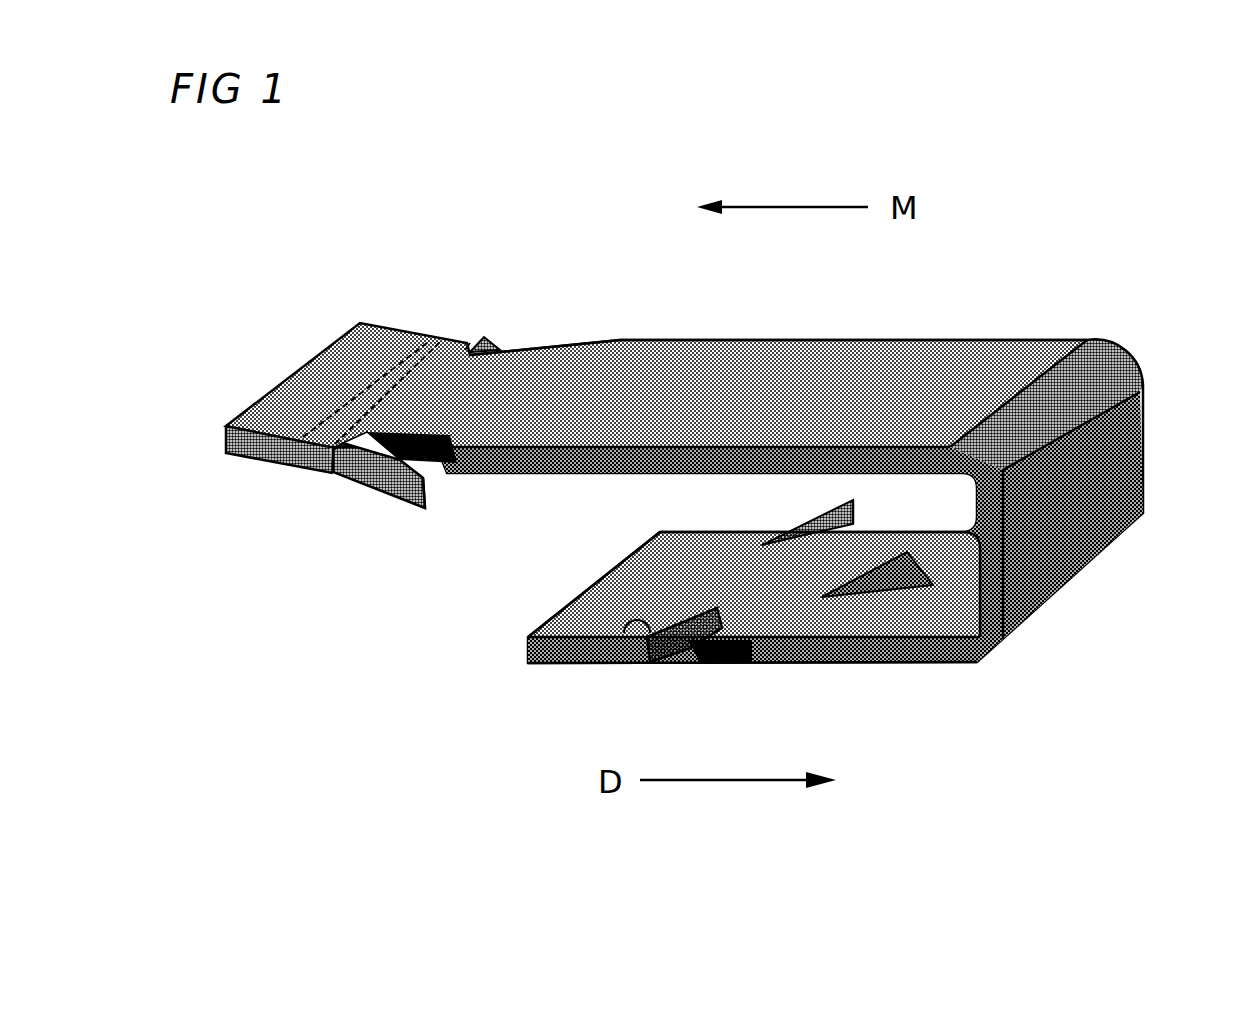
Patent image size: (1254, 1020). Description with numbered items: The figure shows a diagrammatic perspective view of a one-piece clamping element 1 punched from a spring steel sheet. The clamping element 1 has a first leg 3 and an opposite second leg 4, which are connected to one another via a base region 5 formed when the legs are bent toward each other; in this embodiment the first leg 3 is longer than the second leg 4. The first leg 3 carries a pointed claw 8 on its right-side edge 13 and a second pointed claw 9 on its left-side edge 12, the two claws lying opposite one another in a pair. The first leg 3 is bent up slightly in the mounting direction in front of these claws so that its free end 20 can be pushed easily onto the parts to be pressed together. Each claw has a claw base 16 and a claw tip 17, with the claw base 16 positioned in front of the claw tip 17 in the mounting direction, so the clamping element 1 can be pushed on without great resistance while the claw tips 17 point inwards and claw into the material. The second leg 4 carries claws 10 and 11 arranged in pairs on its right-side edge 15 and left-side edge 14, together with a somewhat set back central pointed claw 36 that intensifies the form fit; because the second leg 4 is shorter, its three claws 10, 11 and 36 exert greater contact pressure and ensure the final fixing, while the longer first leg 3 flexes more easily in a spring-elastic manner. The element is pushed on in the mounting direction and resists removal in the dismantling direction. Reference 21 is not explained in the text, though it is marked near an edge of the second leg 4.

The clamping element 1 is at (1154, 231).
The first leg 3 is at (735, 368).
The second leg 4 is at (843, 667).
The base region 5 is at (1143, 452).
The pointed claw 8 is at (497, 352).
The second pointed claw 9 is at (380, 488).
The claw 10 is at (858, 516).
The claw 11 is at (685, 662).
The left-side edge 12 is at (614, 478).
The right-side edge 13 is at (628, 338).
The left-side edge 14 is at (602, 680).
The right-side edge 15 is at (735, 528).
The claw base 16 is at (472, 346).
The claw tip 17 is at (420, 503).
The free end 20 is at (268, 388).
The side edge of lower leg 21 is at (582, 592).
The central pointed claw 36 is at (913, 569).